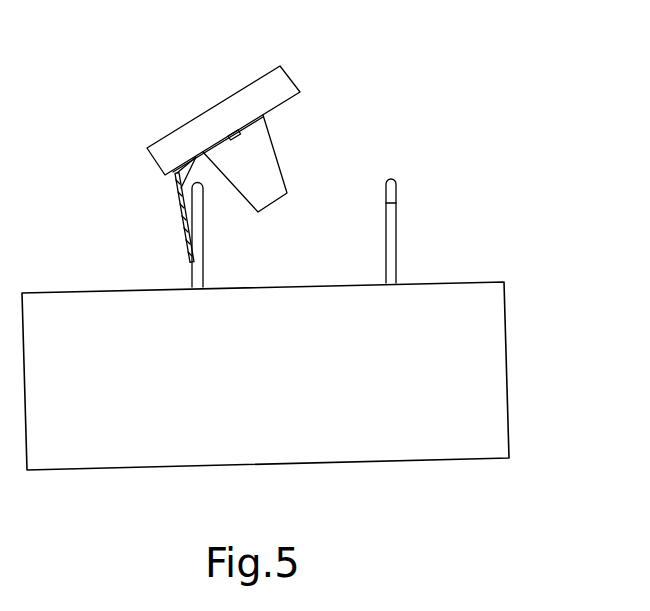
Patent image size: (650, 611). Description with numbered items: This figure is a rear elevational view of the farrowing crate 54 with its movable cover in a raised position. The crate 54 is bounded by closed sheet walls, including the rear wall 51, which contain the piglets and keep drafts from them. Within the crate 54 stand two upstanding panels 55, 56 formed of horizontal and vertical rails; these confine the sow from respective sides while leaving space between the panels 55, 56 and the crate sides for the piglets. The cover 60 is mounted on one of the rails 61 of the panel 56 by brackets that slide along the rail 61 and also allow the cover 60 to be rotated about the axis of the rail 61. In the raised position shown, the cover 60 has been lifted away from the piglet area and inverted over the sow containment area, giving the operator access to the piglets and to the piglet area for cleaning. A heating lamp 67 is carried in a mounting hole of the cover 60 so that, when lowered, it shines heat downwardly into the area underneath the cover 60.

The rear wall 51 is at (490, 388).
The crate 54 is at (324, 357).
The upstanding panel 55 is at (398, 248).
The upstanding panel 56 is at (195, 277).
The cover 60 is at (305, 73).
The rail 61 is at (197, 252).
The heating lamp 67 is at (263, 160).